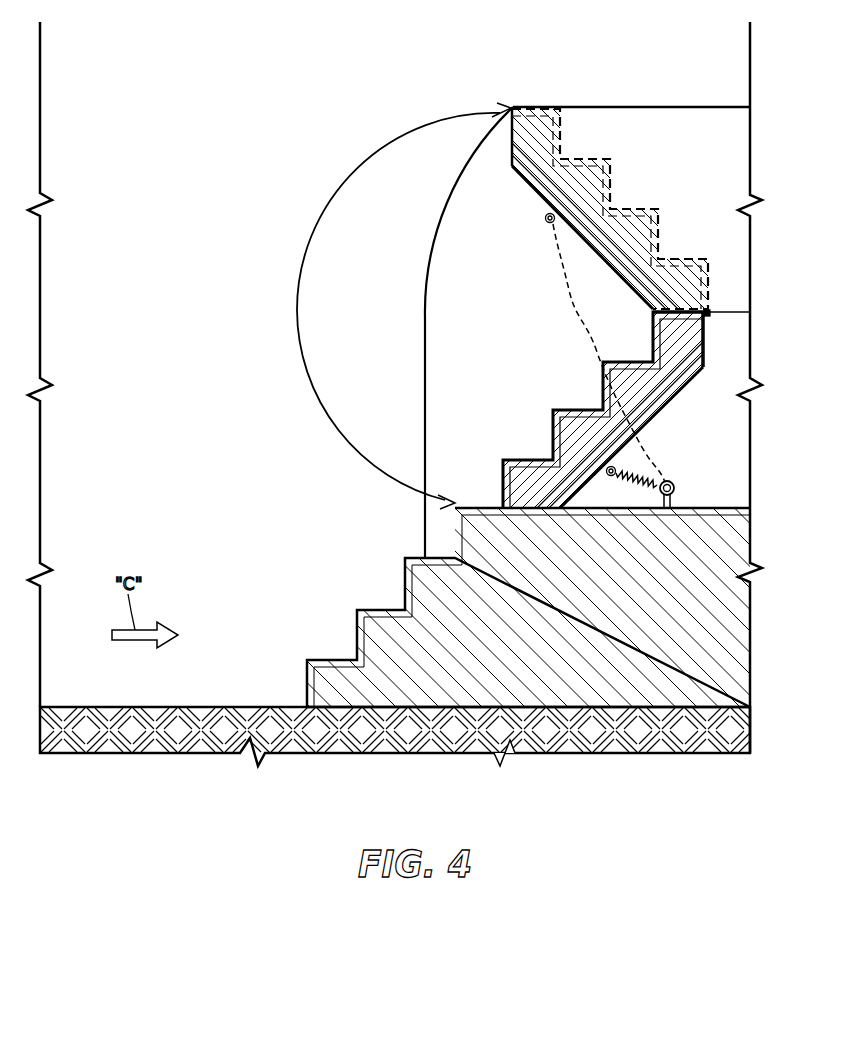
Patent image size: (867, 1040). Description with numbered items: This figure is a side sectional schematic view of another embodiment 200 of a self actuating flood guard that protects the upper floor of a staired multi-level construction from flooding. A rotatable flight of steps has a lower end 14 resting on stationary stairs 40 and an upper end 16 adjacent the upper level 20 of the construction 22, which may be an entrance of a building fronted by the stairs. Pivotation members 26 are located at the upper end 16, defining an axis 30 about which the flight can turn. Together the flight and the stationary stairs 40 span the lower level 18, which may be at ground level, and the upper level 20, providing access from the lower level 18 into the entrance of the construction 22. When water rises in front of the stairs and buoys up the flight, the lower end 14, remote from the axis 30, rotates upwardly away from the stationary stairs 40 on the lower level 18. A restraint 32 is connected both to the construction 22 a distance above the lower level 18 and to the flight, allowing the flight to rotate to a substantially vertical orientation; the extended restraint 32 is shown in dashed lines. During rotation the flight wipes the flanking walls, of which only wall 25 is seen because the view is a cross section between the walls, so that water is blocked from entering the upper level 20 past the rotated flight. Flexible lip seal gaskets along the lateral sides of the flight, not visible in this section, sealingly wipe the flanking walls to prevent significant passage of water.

The lower end 14 is at (593, 425).
The upper end 16 is at (700, 322).
The lower level 18 is at (86, 706).
The upper level 20 is at (727, 312).
The construction 22 is at (750, 128).
The wall 25 is at (525, 258).
The pivotation members 26 is at (708, 318).
The axis 30 is at (712, 313).
The restraint 32 is at (590, 325).
The stationary stairs 40 is at (368, 606).
The embodiment 200 is at (322, 130).